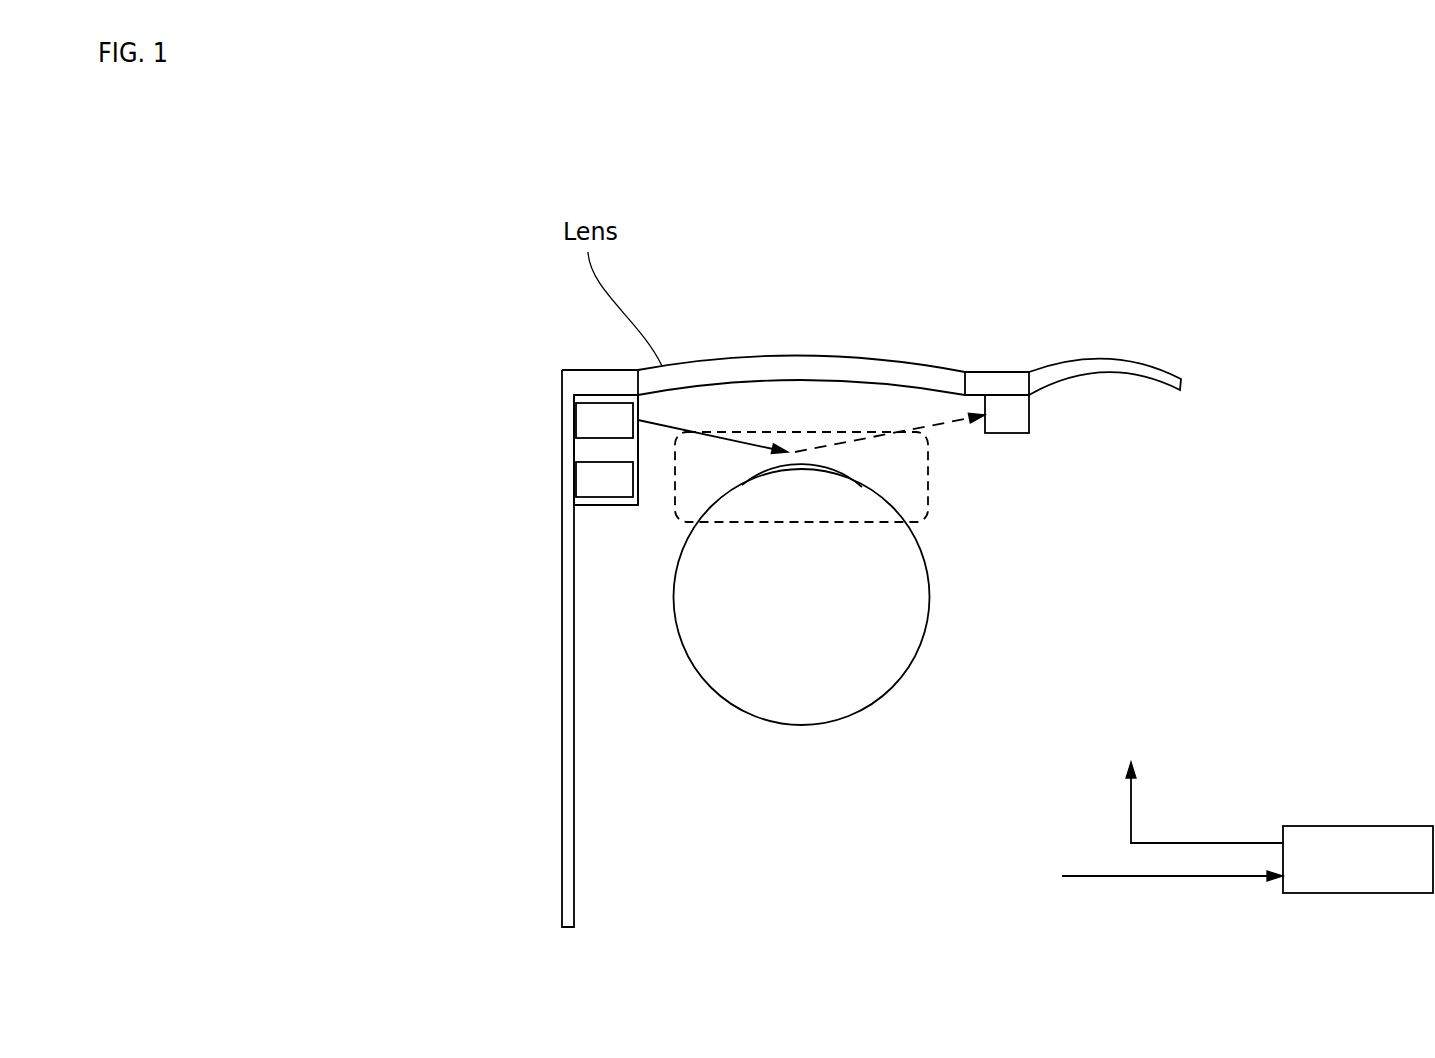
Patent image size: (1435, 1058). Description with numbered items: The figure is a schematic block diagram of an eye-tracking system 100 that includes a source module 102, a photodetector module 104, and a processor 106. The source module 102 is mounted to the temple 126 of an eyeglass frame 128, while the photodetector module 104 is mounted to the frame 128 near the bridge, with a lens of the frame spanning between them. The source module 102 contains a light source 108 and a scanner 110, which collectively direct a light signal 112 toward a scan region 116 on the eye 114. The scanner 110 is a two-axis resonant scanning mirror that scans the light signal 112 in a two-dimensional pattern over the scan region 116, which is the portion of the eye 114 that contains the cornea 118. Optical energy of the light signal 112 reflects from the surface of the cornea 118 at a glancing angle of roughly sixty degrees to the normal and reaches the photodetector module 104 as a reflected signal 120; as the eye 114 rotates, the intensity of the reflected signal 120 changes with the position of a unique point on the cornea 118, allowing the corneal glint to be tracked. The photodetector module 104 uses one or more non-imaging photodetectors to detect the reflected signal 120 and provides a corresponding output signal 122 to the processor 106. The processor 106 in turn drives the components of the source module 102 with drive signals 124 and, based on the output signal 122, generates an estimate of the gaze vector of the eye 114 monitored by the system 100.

The eye-tracking system 100 is at (413, 276).
The source module 102 is at (583, 455).
The photodetector module 104 is at (1017, 414).
The processor 106 is at (1333, 893).
The light source 108 is at (604, 479).
The scanner 110 is at (604, 420).
The light signal 112 is at (665, 422).
The eye 114 is at (850, 612).
The scan region 116 is at (878, 525).
The cornea 118 is at (827, 465).
The reflected signal 120 is at (928, 432).
The output signal 122 is at (1117, 880).
The drive signals 124 is at (1210, 843).
The temple 126 is at (560, 623).
The eyeglass frame 128 is at (1155, 370).